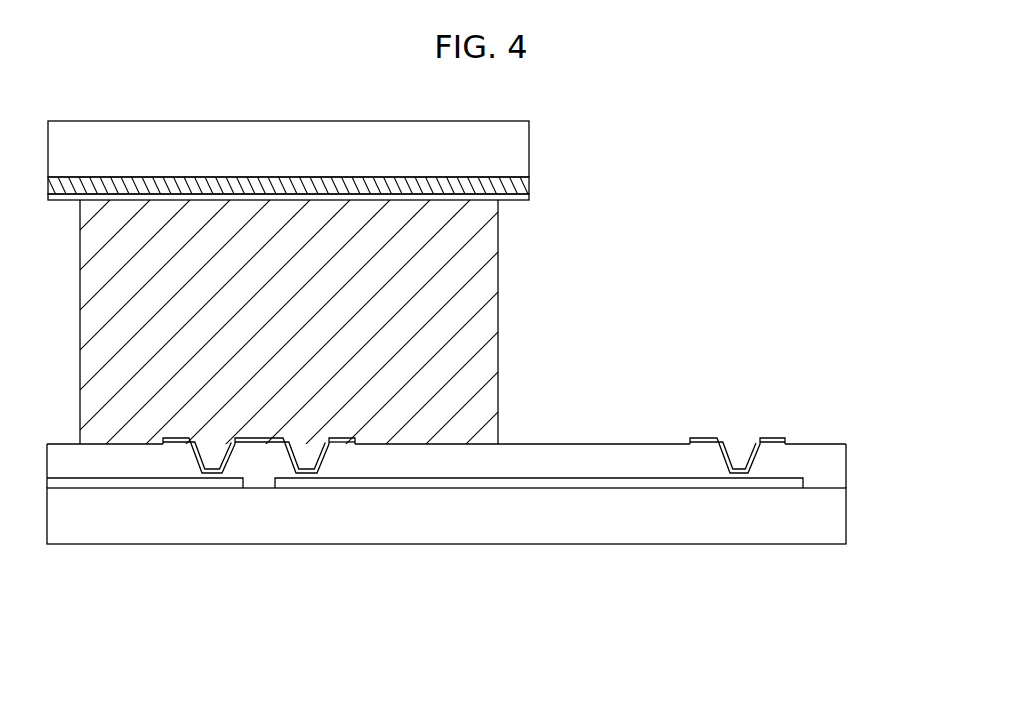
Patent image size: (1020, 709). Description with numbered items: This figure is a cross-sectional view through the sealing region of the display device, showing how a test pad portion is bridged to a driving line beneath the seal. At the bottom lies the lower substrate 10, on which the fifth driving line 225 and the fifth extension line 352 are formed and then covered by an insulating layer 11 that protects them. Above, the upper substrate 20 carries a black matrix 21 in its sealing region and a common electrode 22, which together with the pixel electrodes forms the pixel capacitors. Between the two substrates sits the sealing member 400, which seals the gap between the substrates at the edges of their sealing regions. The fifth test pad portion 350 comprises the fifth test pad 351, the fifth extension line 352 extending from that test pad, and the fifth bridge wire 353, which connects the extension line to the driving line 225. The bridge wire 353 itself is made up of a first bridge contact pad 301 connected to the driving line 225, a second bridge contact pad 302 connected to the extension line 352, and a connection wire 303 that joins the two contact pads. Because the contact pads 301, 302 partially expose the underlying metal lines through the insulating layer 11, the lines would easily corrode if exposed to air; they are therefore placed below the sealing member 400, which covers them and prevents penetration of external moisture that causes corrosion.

The upper substrate 20 is at (525, 152).
The black matrix 21 is at (529, 186).
The common electrode 22 is at (529, 197).
The sealing member 400 is at (477, 308).
The insulating layer 11 is at (830, 470).
The lower substrate 10 is at (830, 521).
The fifth driving line 225 is at (163, 483).
The first bridge contact pad 301 is at (240, 473).
The connection wire 303 is at (262, 450).
The second bridge contact pad 302 is at (327, 453).
The fifth bridge wire 353 is at (260, 539).
The fifth extension line 352 is at (498, 481).
The fifth test pad 351 is at (757, 467).
The fifth test pad portion 350 is at (778, 649).